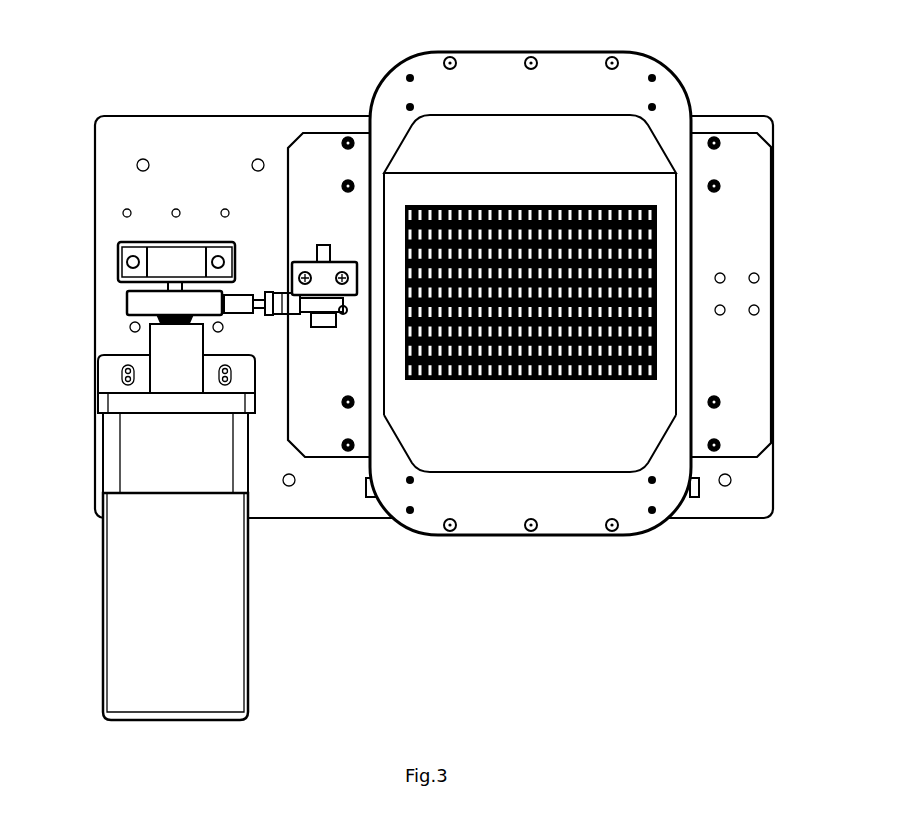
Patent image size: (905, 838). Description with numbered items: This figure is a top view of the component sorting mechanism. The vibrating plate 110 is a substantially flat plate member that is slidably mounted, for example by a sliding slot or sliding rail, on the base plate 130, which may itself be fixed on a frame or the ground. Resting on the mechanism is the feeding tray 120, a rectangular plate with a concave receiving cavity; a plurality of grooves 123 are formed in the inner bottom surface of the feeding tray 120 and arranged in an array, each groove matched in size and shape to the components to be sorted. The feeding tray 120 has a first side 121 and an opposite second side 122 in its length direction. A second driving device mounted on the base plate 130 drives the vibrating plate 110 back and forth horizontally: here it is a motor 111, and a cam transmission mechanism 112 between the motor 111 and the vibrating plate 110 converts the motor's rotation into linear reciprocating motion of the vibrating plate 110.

The vibrating plate 110 is at (750, 222).
The motor 111 is at (222, 616).
The cam transmission mechanism 112 is at (143, 302).
The feeding tray 120 is at (566, 297).
The first side 121 is at (560, 516).
The second side 122 is at (563, 75).
The grooves 123 is at (657, 337).
The base plate 130 is at (753, 497).